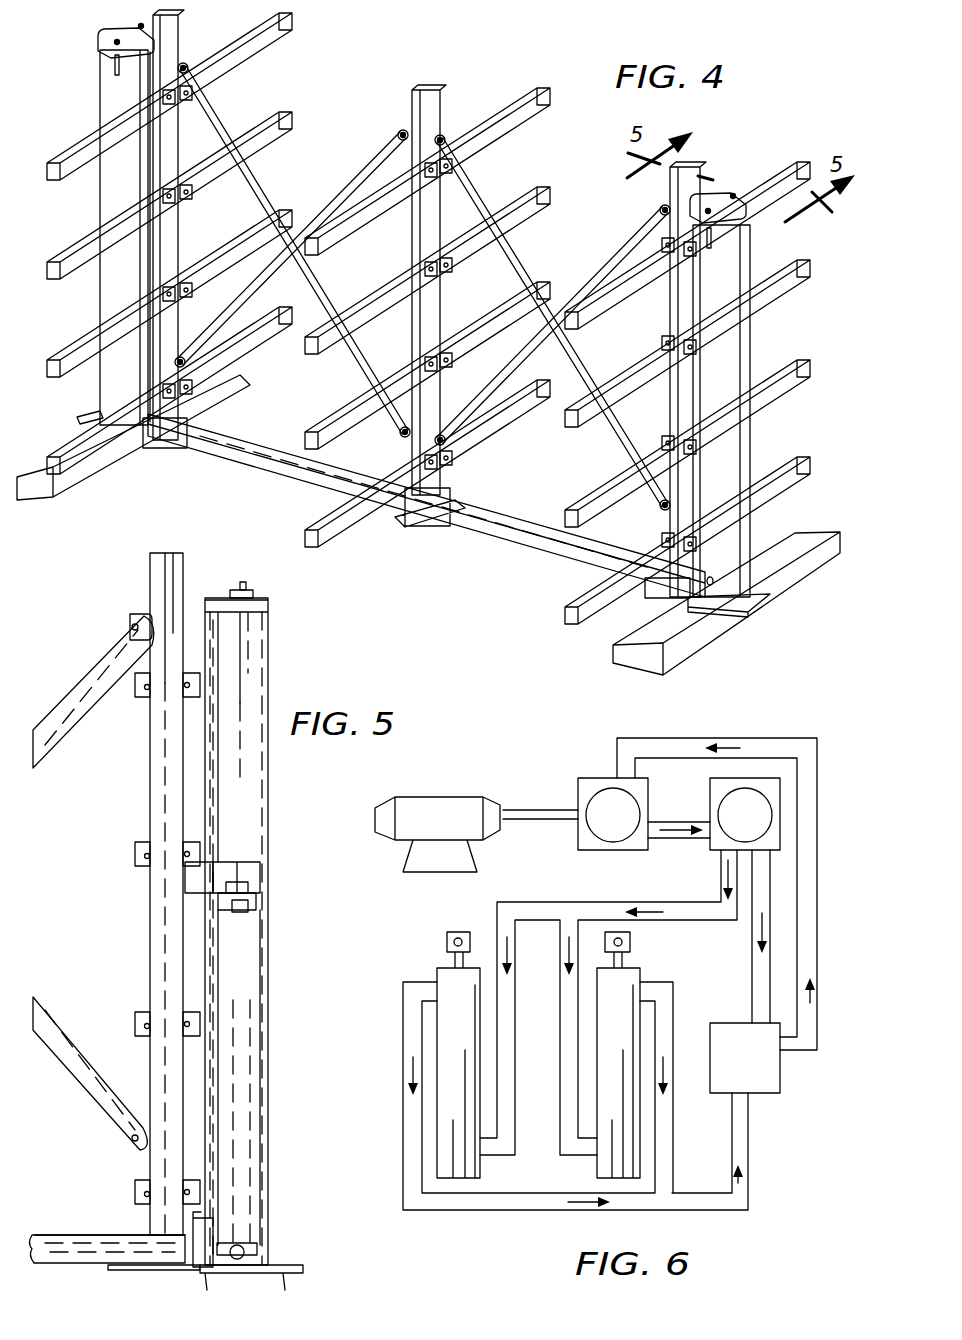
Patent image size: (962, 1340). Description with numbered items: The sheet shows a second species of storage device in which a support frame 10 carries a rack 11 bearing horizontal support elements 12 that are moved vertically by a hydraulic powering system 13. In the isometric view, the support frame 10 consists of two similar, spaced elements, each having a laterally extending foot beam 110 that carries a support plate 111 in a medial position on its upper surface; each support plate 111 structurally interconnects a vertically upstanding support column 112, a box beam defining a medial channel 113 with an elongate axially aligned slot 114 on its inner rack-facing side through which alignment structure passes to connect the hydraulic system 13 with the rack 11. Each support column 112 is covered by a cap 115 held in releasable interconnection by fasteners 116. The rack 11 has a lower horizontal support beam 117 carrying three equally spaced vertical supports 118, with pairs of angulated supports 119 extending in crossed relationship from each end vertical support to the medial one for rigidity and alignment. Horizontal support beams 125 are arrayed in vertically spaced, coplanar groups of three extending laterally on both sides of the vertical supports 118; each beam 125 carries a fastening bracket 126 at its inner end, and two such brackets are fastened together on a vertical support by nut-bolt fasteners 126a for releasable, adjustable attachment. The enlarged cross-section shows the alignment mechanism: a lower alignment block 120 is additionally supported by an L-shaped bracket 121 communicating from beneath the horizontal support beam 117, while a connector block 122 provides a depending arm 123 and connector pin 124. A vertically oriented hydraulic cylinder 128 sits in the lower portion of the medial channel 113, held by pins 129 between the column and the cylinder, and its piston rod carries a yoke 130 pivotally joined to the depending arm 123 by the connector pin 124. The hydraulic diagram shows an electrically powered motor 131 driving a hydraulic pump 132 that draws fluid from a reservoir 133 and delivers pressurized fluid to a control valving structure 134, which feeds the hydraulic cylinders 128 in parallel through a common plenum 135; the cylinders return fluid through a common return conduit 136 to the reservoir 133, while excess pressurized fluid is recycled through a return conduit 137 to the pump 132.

In FIG. 4, the support frame 10 is at (430, 339).
In FIG. 5, the support frame 10 is at (200, 915).
In FIG. 4, the rack 11 is at (420, 528).
In FIG. 5, the rack 11 is at (130, 635).
In FIG. 4, the horizontal support elements 12 is at (311, 422).
In FIG. 5, the horizontal support elements 12 is at (68, 1232).
In FIG. 5, the hydraulic powering system 13 is at (255, 987).
In FIG. 4, the foot beam 110 is at (37, 473).
In FIG. 4, the support plate 111 is at (97, 414).
In FIG. 5, the support plate 111 is at (285, 1255).
In FIG. 4, the support column 112 is at (118, 180).
In FIG. 5, the support column 112 is at (268, 628).
In FIG. 5, the medial channel 113 is at (235, 690).
In FIG. 4, the slot 114 is at (147, 80).
In FIG. 4, the cap 115 is at (130, 32).
In FIG. 5, the cap 115 is at (262, 600).
In FIG. 4, the fastener 116 is at (114, 64).
In FIG. 5, the fastener 116 is at (228, 586).
In FIG. 4, the lower horizontal support beam 117 is at (592, 556).
In FIG. 5, the lower horizontal support beam 117 is at (82, 1258).
In FIG. 4, the vertical support 118 is at (160, 150).
In FIG. 5, the vertical support 118 is at (163, 785).
In FIG. 4, the angulated support 119 is at (262, 195).
In FIG. 5, the angulated support 119 is at (83, 687).
In FIG. 5, the lower alignment block 120 is at (205, 1245).
In FIG. 4, the L-shaped bracket 121 is at (665, 592).
In FIG. 5, the L-shaped bracket 121 is at (155, 1270).
In FIG. 5, the connector block 122 is at (245, 862).
In FIG. 5, the depending arm 123 is at (248, 885).
In FIG. 5, the connector pin 124 is at (256, 897).
In FIG. 4, the support beam 125 is at (85, 355).
In FIG. 4, the fastening bracket 126 is at (440, 272).
In FIG. 5, the fastening bracket 126 is at (140, 1012).
In FIG. 4, the nut-bolt fasteners 126a is at (180, 235).
In FIG. 5, the nut-bolt fasteners 126a is at (183, 690).
In FIG. 5, the hydraulic cylinder 128 is at (238, 1127).
In FIG. 6, the hydraulic cylinder 128 is at (597, 1170).
In FIG. 4, the pin 129 is at (712, 592).
In FIG. 5, the pin 129 is at (240, 1243).
In FIG. 5, the yoke 130 is at (232, 905).
In FIG. 6, the motor 131 is at (453, 807).
In FIG. 6, the hydraulic pump 132 is at (603, 778).
In FIG. 6, the reservoir 133 is at (780, 1067).
In FIG. 6, the control valving structure 134 is at (718, 852).
In FIG. 6, the common plenum 135 is at (588, 902).
In FIG. 6, the common return conduit 136 is at (605, 1212).
In FIG. 6, the return conduit 137 is at (752, 985).